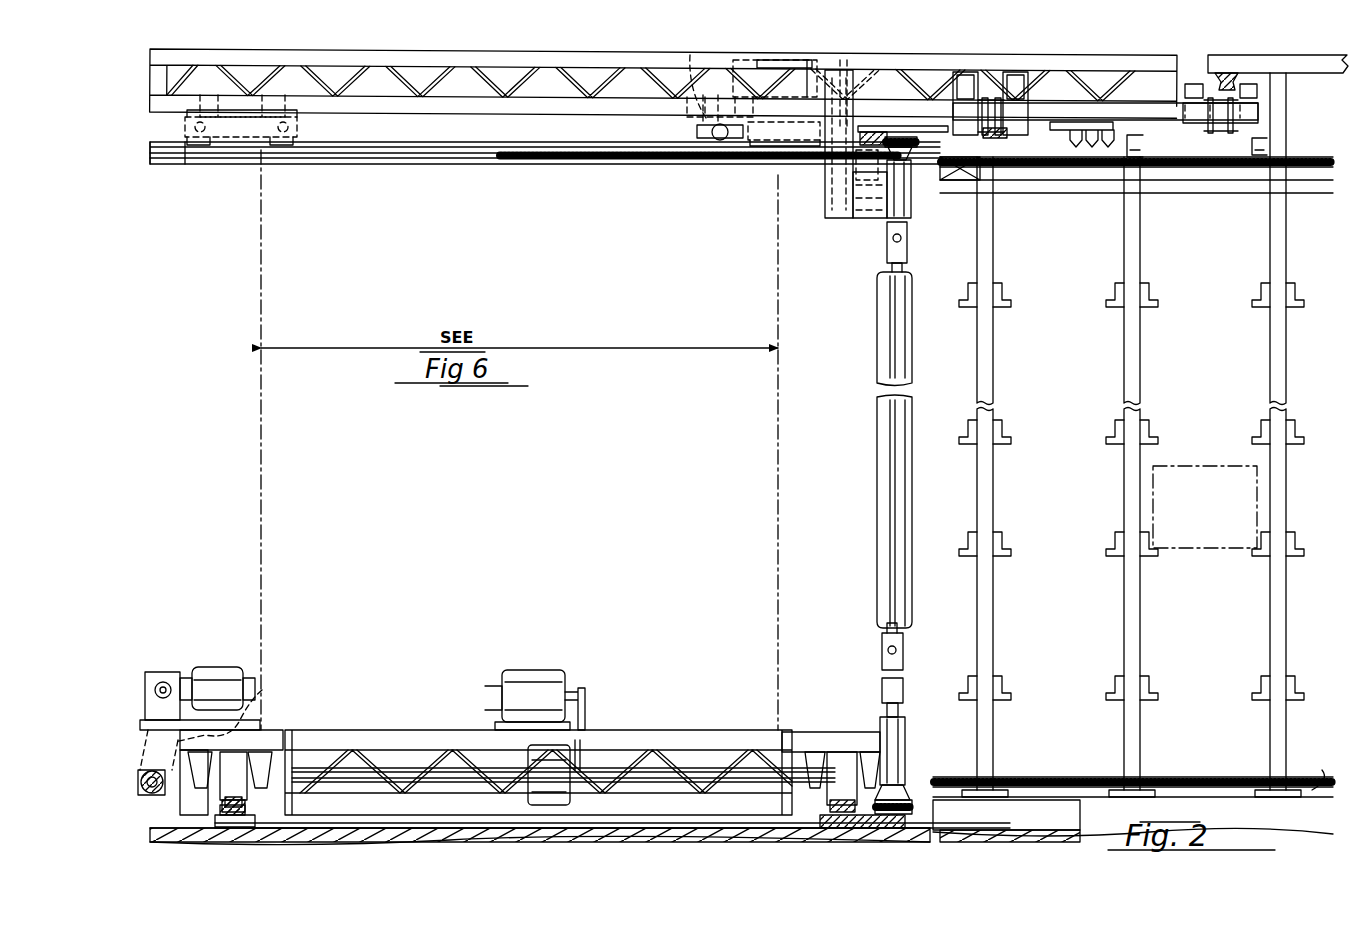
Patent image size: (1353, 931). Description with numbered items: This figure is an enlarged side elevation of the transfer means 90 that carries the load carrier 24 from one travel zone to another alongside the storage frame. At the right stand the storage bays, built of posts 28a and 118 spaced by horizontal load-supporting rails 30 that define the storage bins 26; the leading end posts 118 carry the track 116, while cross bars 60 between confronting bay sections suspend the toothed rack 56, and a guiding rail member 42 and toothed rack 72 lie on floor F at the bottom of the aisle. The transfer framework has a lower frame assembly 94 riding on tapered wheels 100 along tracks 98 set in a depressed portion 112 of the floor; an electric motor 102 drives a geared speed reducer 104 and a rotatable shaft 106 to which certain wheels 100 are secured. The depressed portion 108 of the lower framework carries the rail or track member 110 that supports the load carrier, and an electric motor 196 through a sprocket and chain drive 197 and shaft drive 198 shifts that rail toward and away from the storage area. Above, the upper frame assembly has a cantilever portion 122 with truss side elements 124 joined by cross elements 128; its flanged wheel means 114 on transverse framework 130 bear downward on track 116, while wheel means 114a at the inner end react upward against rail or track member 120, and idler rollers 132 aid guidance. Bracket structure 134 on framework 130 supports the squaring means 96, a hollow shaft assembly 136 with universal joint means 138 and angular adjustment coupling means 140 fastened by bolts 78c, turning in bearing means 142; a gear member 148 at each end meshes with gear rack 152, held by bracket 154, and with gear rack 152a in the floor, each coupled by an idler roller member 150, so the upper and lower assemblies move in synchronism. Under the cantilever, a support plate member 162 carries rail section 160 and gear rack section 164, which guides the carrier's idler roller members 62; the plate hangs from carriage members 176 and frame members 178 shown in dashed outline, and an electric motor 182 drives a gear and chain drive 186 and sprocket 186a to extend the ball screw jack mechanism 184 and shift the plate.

The cantilever portion 122 is at (318, 44).
The side elements 124 is at (432, 82).
The tracks 98 is at (508, 48).
The rail section 160 is at (462, 164).
The support plate member 162 is at (545, 147).
The gear rack section 164 is at (566, 164).
The idler roller members 62 is at (190, 152).
The cross elements 128 is at (290, 104).
The carriage rollers 176 is at (300, 127).
The carriage frames 178 is at (272, 138).
The ball screw jack mechanism 184 is at (697, 132).
The gear and chain drive 186 is at (690, 55).
The sprocket 186a is at (714, 136).
The electric motor 182 is at (795, 50).
The gear rack 152 is at (835, 168).
The bracket structure 134 is at (853, 214).
The bracket 154 is at (870, 132).
The idler roller member 150 is at (875, 128).
The gear member 148 is at (905, 137).
The bearing means 142 is at (911, 208).
The universal joint means 138 is at (887, 246).
The squaring means 96 is at (870, 355).
The hollow shaft assembly 136 is at (880, 542).
The angular adjustment coupling means 140 is at (882, 688).
The bolts 78c is at (887, 710).
The idler rollers 132 is at (1022, 118).
The flanged wheel means 114 is at (988, 80).
The transverse framework 130 is at (1030, 80).
The track 116 is at (1000, 138).
The cross bars 60 is at (1143, 146).
The flanged wheel means 114a is at (1245, 140).
The rail or track member 120 is at (1232, 80).
The toothed rack 56 is at (1172, 181).
The toothed rack 72 is at (1088, 778).
The guiding rail member 42 is at (1195, 768).
The gear rack 152a is at (925, 816).
The floor F is at (1322, 773).
The leading end posts 118 is at (994, 228).
The posts 28a is at (1142, 240).
The load-supporting rails 30 is at (1105, 302).
The storage bins 26 is at (1230, 432).
The load carrier 24 is at (257, 313).
The lower frame assembly 94 is at (374, 730).
The rotatable shaft 106 is at (430, 768).
The geared speed reducer 104 is at (525, 792).
The electric motor 102 is at (545, 670).
The depressed portion 112 is at (645, 828).
The transfer means 90 is at (638, 722).
The electric motor 196 is at (218, 672).
The shaft drive 198 is at (152, 795).
The sprocket and chain drive 197 is at (255, 698).
The tapered wheels 100 is at (232, 776).
The rail or track member 110 is at (185, 815).
The depressed portion 108 is at (230, 828).